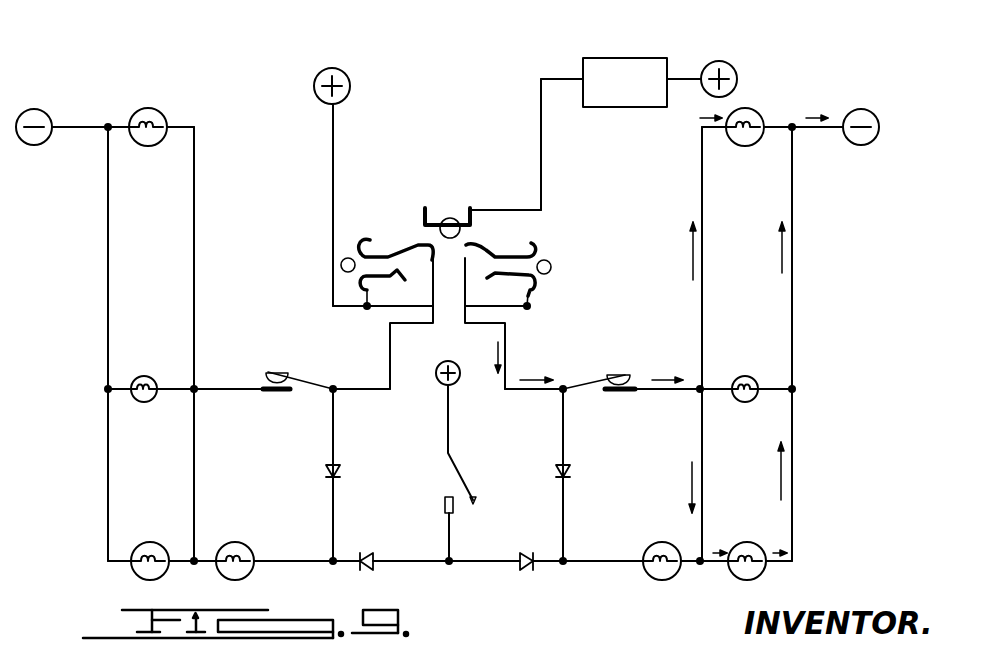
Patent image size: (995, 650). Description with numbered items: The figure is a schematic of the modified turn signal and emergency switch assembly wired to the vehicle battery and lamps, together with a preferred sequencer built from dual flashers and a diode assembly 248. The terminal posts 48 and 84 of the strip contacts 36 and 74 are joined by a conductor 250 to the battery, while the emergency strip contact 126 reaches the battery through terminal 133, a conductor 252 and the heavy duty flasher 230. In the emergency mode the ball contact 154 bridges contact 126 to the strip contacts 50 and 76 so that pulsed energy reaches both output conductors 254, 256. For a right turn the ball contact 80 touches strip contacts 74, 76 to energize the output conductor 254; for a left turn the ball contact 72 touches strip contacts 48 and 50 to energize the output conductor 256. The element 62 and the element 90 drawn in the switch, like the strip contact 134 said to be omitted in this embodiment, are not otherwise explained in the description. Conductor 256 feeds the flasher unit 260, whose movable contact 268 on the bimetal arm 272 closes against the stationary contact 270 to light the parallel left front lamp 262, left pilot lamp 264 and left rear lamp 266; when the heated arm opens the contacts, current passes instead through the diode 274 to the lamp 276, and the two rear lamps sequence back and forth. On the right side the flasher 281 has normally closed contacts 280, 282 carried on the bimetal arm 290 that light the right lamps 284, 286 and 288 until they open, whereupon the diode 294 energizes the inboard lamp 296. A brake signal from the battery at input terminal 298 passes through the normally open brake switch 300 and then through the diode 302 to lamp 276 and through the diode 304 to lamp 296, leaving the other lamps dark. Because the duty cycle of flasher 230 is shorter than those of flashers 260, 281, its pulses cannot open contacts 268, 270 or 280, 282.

The left front lamp 262 is at (152, 108).
The left pilot lamp 264 is at (146, 376).
The left rear lamp 266 is at (150, 542).
The lamp 276 is at (238, 542).
The right lamp 284 is at (758, 109).
The right lamp 286 is at (744, 376).
The right lamp 288 is at (748, 542).
The inboard lamp 296 is at (662, 542).
The conductor 250 is at (333, 128).
The heavy duty flasher circuit 230 is at (660, 58).
The output conductor 254 is at (698, 72).
The ball contact 154 is at (449, 217).
The emergency strip contact 126 is at (423, 207).
The terminal 133 is at (476, 210).
The conductor 252 is at (514, 210).
The plunger 90 is at (432, 327).
The contact arm 62 is at (410, 257).
The strip contact 50 is at (376, 226).
The ball contact 72 is at (341, 266).
The terminal post 48 is at (371, 293).
The strip contact 36 is at (362, 283).
The strip contact 134 is at (501, 241).
The strip contact 76 is at (537, 243).
The ball contact 80 is at (552, 264).
The terminal post 84 is at (538, 291).
The strip contact 74 is at (550, 282).
The flasher unit 260 is at (268, 367).
The stationary contact 270 is at (274, 392).
The movable contact 268 is at (297, 358).
The arm 272 is at (316, 381).
The diode assembly 248 is at (582, 352).
The flasher 281 is at (601, 371).
The normally closed contact 280 is at (628, 377).
The normally closed contact 282 is at (631, 392).
The bimetal arm 290 is at (586, 385).
The output conductor 256 is at (390, 350).
The input terminal 298 is at (458, 383).
The brake switch 300 is at (477, 470).
The diode 274 is at (341, 470).
The diode 294 is at (572, 470).
The diode 302 is at (365, 553).
The diode 304 is at (533, 553).